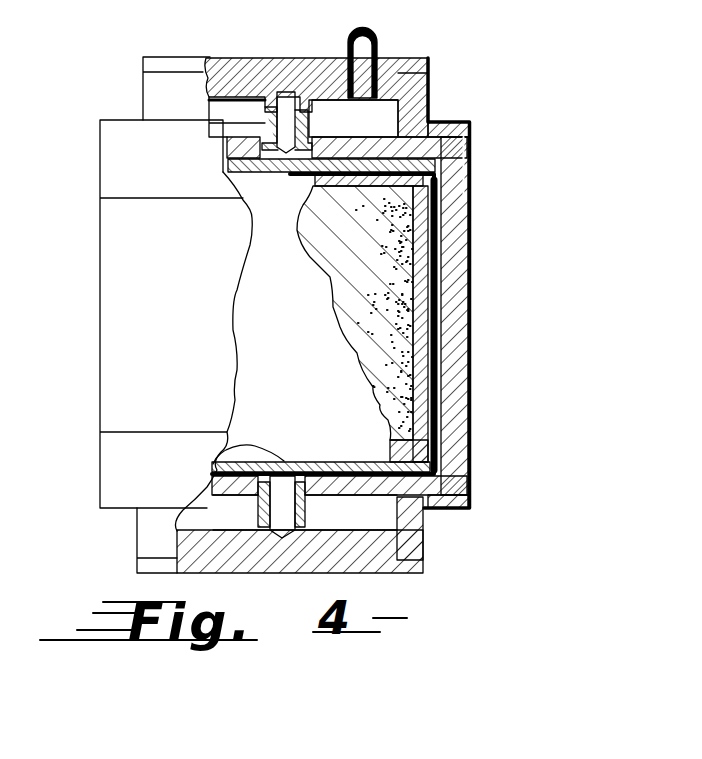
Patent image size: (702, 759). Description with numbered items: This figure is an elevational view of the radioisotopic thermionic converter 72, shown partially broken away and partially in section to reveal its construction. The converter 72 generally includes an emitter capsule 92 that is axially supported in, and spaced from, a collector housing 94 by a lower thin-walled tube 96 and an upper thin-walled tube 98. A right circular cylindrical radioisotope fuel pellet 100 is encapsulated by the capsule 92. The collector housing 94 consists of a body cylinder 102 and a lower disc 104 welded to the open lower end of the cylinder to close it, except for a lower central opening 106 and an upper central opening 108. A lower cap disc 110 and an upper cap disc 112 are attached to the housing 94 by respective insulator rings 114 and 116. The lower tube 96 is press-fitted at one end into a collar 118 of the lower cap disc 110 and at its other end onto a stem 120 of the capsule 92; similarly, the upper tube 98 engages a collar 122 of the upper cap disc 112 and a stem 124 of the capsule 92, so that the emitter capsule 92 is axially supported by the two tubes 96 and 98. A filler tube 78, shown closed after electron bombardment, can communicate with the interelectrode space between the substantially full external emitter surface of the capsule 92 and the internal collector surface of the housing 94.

The radioisotopic thermionic converter 72 is at (90, 248).
The filler tube 78 is at (350, 35).
The emitter capsule 92 is at (441, 337).
The collector housing 94 is at (468, 374).
The lower thin-walled tube 96 is at (267, 512).
The upper thin-walled tube 98 is at (265, 112).
The radioisotope fuel pellet 100 is at (414, 258).
The body cylinder 102 is at (457, 419).
The lower disc 104 is at (450, 488).
The lower central opening 106 is at (295, 463).
The upper central opening 108 is at (290, 174).
The lower cap disc 110 is at (417, 573).
The upper cap disc 112 is at (413, 60).
The insulator ring 114 is at (423, 533).
The insulator ring 116 is at (430, 96).
The collar 118 is at (304, 515).
The stem 120 is at (222, 450).
The collar 122 is at (310, 116).
The stem 124 is at (233, 149).